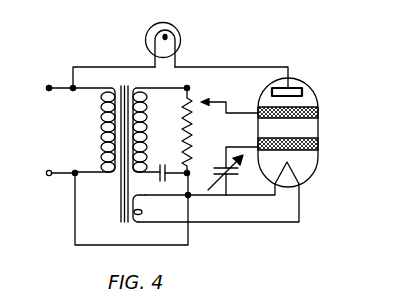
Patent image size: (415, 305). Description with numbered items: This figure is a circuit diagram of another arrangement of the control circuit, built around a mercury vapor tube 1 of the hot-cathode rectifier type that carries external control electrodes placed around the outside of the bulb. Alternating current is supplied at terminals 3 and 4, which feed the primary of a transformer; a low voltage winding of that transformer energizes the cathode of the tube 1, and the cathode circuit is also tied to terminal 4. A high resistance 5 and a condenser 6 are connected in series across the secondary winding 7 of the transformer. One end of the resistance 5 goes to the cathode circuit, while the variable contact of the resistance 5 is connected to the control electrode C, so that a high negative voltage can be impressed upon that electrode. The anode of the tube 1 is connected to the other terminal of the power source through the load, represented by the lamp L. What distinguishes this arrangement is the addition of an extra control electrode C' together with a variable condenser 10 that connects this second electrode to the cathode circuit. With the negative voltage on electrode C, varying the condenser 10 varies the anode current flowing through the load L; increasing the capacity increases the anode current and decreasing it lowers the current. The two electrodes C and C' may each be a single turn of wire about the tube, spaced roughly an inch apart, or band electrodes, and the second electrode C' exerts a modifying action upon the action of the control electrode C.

The mercury vapor tube 1 is at (306, 84).
The terminal 3 is at (51, 89).
The terminal 4 is at (52, 174).
The high resistance 5 is at (194, 122).
The condenser 6 is at (164, 165).
The secondary winding 7 is at (148, 121).
The variable condenser 10 is at (233, 171).
The lamp L is at (181, 31).
The control electrode C is at (299, 119).
The extra control electrode C' is at (301, 148).